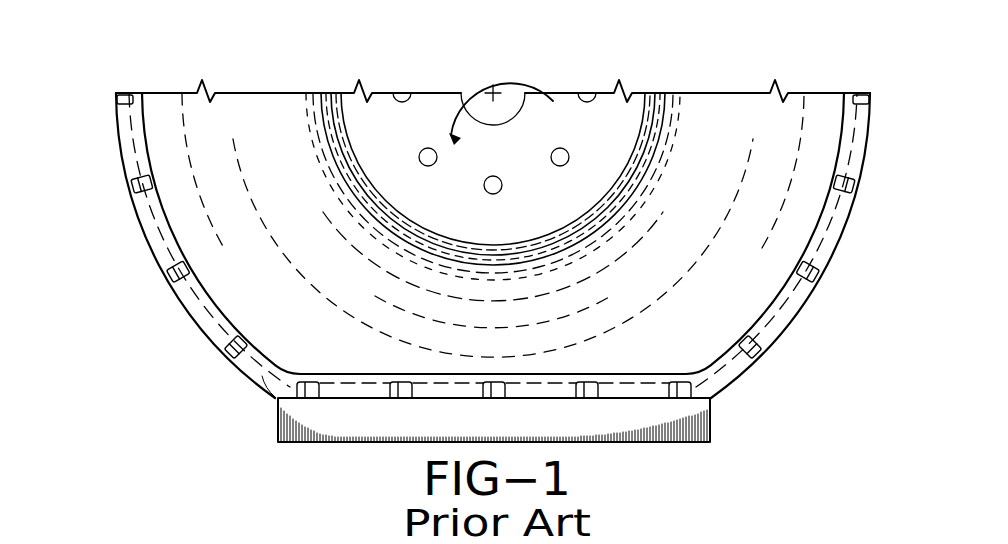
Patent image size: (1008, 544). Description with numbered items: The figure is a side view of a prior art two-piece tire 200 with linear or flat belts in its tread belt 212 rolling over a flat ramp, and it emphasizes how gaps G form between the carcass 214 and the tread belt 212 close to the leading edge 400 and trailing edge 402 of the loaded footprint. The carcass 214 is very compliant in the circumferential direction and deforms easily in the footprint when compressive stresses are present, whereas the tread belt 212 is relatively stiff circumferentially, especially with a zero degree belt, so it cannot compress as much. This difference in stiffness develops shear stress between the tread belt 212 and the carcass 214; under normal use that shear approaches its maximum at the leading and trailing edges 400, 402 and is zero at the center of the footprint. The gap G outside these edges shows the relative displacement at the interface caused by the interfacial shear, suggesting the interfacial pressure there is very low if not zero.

The two-piece tire 200 is at (88, 120).
The carcass 214 is at (727, 101).
The tread belt 212 is at (865, 130).
The gap G is at (218, 306).
The trailing edge 402 is at (247, 378).
The leading edge 400 is at (733, 384).